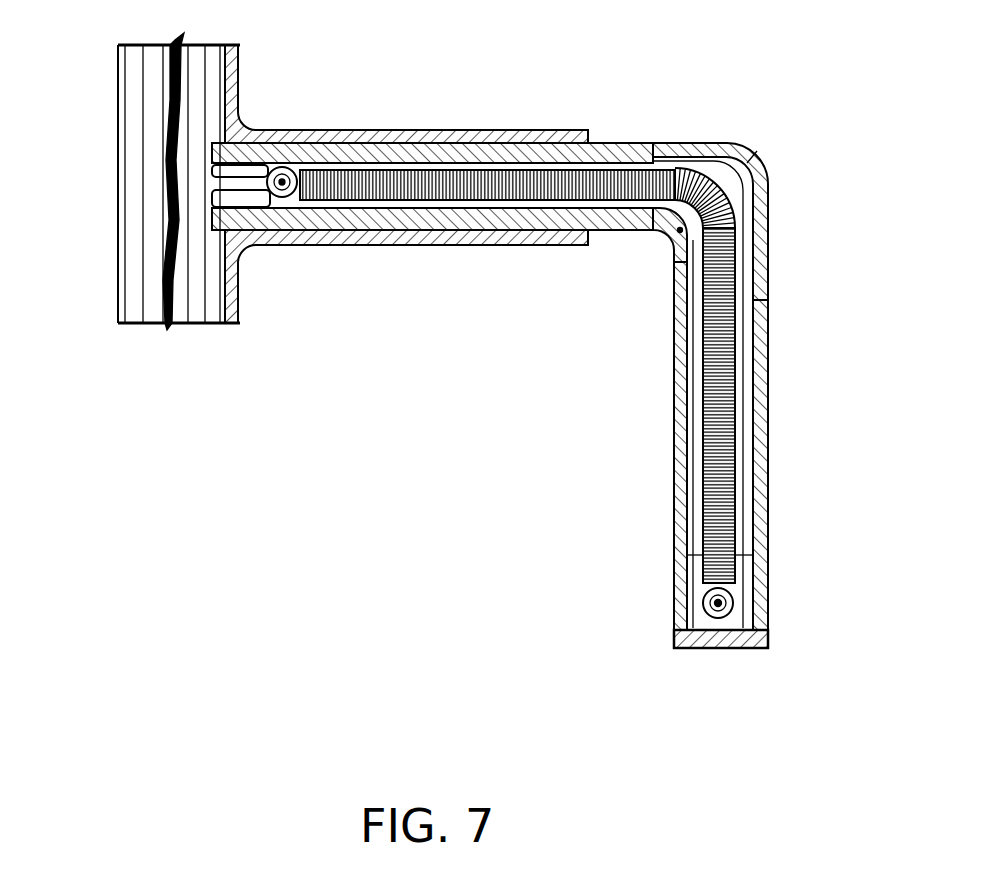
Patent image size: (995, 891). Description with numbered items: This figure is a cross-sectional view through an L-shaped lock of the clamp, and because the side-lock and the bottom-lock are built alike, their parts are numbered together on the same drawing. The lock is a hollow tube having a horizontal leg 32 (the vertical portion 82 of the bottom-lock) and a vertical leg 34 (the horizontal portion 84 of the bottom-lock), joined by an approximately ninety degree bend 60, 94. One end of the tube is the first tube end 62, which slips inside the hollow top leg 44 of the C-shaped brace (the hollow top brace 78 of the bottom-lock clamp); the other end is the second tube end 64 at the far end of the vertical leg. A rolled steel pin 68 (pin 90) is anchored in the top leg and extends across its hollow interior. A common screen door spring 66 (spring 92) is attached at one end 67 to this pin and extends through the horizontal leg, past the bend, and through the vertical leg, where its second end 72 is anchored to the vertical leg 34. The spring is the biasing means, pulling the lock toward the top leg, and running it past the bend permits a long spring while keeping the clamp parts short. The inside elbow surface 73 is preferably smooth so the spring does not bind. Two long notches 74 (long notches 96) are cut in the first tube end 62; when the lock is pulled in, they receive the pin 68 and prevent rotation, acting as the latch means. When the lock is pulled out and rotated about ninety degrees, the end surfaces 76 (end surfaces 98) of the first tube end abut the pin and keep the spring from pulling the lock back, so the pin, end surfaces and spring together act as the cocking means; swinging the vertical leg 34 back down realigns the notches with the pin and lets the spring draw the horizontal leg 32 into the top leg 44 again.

The horizontal leg 32 is at (686, 358).
The vertical portion 82 is at (616, 142).
The vertical leg 34 is at (768, 435).
The horizontal portion 84 is at (768, 440).
The top leg 44 is at (406, 94).
The top brace 78 is at (376, 130).
The 90 degree bend 60 is at (798, 176).
The 90° bend 94 is at (750, 160).
The first tube end 62 is at (257, 132).
The second tube end 64 is at (716, 648).
The screen door spring 66 is at (517, 335).
The spring 92 is at (452, 186).
The one end 67 is at (286, 168).
The rolled steel pin 68 is at (432, 244).
The pin 90 is at (288, 232).
The second end 72 is at (703, 604).
The inside elbow surface 73 is at (672, 230).
The long notches 74 is at (406, 276).
The long notches 96 is at (255, 245).
The end surfaces 76 is at (147, 186).
The end surfaces 98 is at (245, 206).